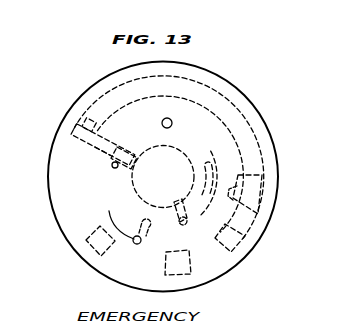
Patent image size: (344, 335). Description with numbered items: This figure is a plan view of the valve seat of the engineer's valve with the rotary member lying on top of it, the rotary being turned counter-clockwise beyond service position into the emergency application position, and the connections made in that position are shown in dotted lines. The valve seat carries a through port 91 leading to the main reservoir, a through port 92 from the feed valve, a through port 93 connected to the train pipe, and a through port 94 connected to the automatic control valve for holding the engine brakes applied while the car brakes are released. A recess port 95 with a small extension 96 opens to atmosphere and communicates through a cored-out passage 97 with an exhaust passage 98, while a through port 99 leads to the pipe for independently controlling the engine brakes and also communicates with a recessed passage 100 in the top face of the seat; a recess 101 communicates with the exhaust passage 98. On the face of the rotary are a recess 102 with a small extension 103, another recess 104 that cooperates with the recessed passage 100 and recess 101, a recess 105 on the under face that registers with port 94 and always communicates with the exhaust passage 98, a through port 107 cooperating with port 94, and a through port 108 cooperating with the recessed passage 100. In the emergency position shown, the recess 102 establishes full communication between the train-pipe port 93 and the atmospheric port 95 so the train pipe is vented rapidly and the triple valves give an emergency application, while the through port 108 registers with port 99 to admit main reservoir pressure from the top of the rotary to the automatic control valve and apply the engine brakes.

The through port 91 is at (95, 232).
The through port 92 is at (165, 272).
The through port 93 is at (238, 232).
The through port 94 is at (168, 118).
The recess port 95 is at (71, 131).
The small extension 96 is at (86, 113).
The cored-out passage 97 is at (100, 152).
The exhaust passage 98 is at (163, 177).
The through port 99 is at (130, 250).
The recessed passage 100 is at (137, 220).
The recess 101 is at (177, 216).
The recess 102 is at (252, 153).
The small extension 103 is at (221, 204).
The recess 104 is at (213, 183).
The recess 105 is at (131, 151).
The through port 107 is at (112, 168).
The through port 108 is at (114, 217).